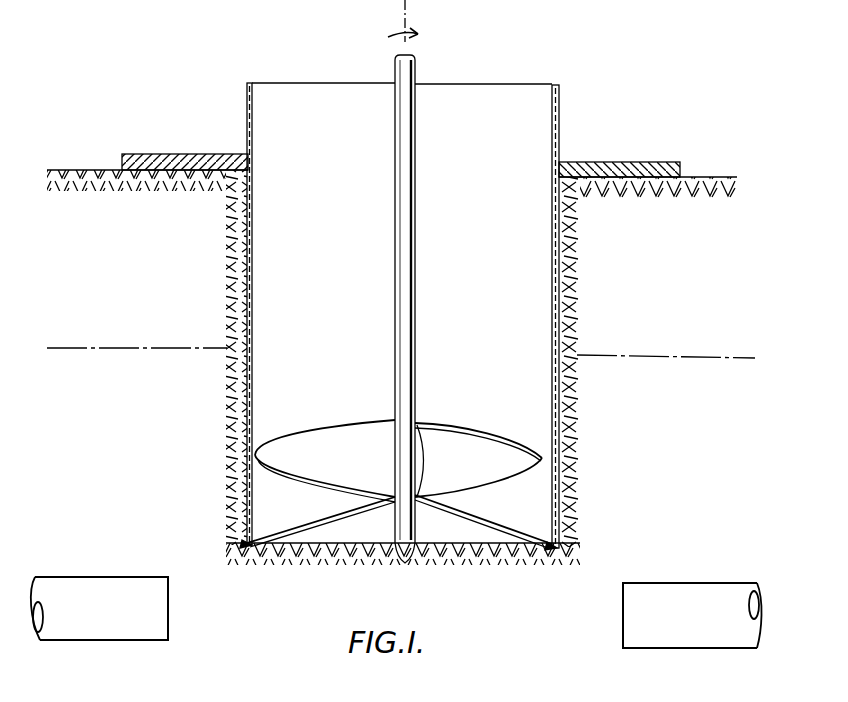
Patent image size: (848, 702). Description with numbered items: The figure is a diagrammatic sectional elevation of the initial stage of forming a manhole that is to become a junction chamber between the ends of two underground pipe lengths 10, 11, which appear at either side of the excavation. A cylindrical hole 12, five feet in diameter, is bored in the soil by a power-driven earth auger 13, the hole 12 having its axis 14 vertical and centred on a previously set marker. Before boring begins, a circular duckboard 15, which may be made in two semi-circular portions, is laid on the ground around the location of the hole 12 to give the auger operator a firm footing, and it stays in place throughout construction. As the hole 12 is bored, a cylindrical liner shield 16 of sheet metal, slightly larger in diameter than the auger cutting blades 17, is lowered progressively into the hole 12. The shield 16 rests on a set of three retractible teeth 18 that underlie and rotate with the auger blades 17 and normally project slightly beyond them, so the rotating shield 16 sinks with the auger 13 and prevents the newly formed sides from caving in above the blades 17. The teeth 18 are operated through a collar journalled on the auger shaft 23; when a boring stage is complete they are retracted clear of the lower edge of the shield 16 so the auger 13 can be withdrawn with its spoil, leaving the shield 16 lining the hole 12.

The pipe section 10 is at (97, 590).
The pipe section 11 is at (684, 600).
The cylindrical hole 12 is at (270, 235).
The power-driven earth auger 13 is at (448, 424).
The axis 14 is at (406, 10).
The circular duckboard 15 is at (193, 158).
The cylindrical liner shield 16 is at (248, 136).
The auger cutting blades 17 is at (521, 531).
The retractible teeth 18 is at (240, 546).
The auger shaft 23 is at (401, 268).